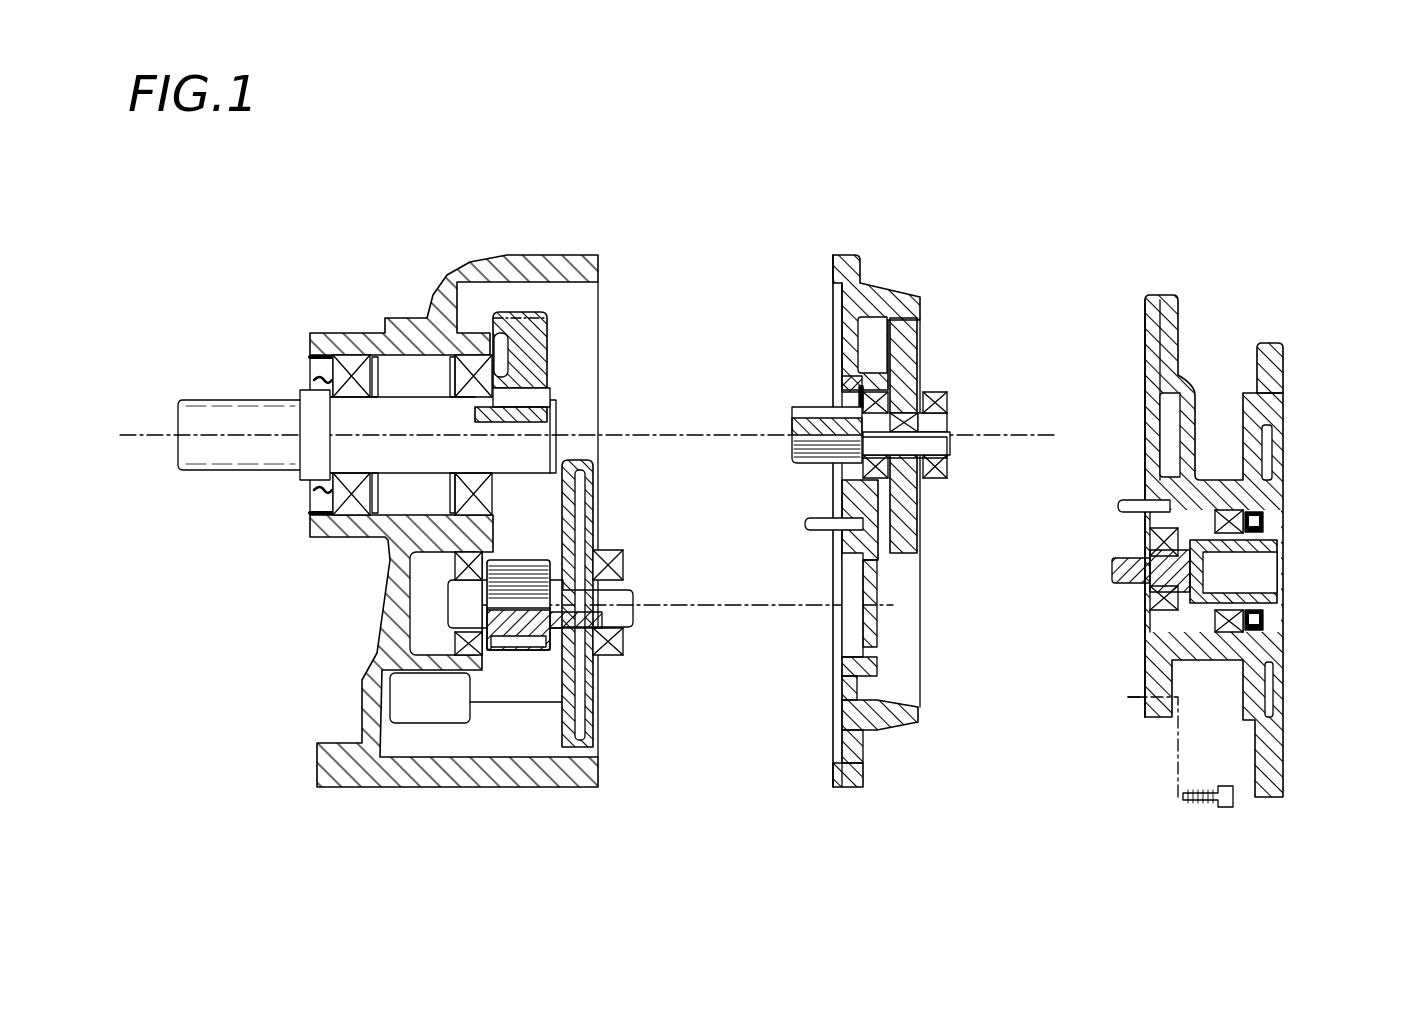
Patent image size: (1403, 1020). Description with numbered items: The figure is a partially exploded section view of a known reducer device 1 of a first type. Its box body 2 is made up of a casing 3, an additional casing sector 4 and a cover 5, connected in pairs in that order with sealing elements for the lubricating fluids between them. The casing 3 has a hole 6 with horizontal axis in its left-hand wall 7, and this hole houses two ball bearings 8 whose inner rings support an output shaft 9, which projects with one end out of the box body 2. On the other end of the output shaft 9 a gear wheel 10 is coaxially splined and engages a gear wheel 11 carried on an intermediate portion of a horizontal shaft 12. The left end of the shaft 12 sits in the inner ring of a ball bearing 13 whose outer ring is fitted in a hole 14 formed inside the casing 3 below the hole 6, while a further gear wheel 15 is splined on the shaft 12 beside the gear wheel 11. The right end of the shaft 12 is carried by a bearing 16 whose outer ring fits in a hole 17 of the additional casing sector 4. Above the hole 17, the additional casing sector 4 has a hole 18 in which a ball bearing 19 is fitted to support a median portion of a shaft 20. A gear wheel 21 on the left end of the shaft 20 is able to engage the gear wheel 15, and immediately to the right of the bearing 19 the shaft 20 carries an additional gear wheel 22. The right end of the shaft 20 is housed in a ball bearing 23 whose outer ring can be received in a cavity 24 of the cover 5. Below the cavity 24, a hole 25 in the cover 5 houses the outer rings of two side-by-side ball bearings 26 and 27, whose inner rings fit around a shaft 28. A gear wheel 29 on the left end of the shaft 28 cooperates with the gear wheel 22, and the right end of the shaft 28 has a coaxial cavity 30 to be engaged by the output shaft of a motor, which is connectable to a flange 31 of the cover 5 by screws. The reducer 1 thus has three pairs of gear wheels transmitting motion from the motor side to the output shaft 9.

The reducer device 1 is at (1221, 461).
The box body 2 is at (867, 444).
The casing 3 is at (541, 257).
The additional casing sector 4 is at (889, 285).
The cover 5 is at (1183, 314).
The hole 6 is at (410, 475).
The wall 7 is at (400, 582).
The ball bearings 8 is at (457, 362).
The output shaft 9 is at (205, 420).
The gear wheel 10 is at (517, 330).
The gear wheel 11 is at (517, 622).
The shaft 12 is at (626, 607).
The ball bearing 13 is at (456, 642).
The hole 14 is at (427, 648).
The gear wheel 15 is at (592, 478).
The bearing 16 is at (612, 550).
The hole 17 is at (859, 657).
The hole 18 is at (855, 398).
The ball bearing 19 is at (861, 394).
The shaft 20 is at (817, 452).
The gear wheel 21 is at (808, 416).
The gear wheel 22 is at (935, 385).
The ball bearing 23 is at (940, 400).
The cavity 24 is at (1150, 395).
The hole 25 is at (1150, 605).
The ball bearing 26 is at (1150, 508).
The ball bearing 27 is at (1252, 520).
The shaft 28 is at (1282, 600).
The gear wheel 29 is at (1130, 571).
The cavity 30 is at (1282, 557).
The flange 31 is at (1270, 345).